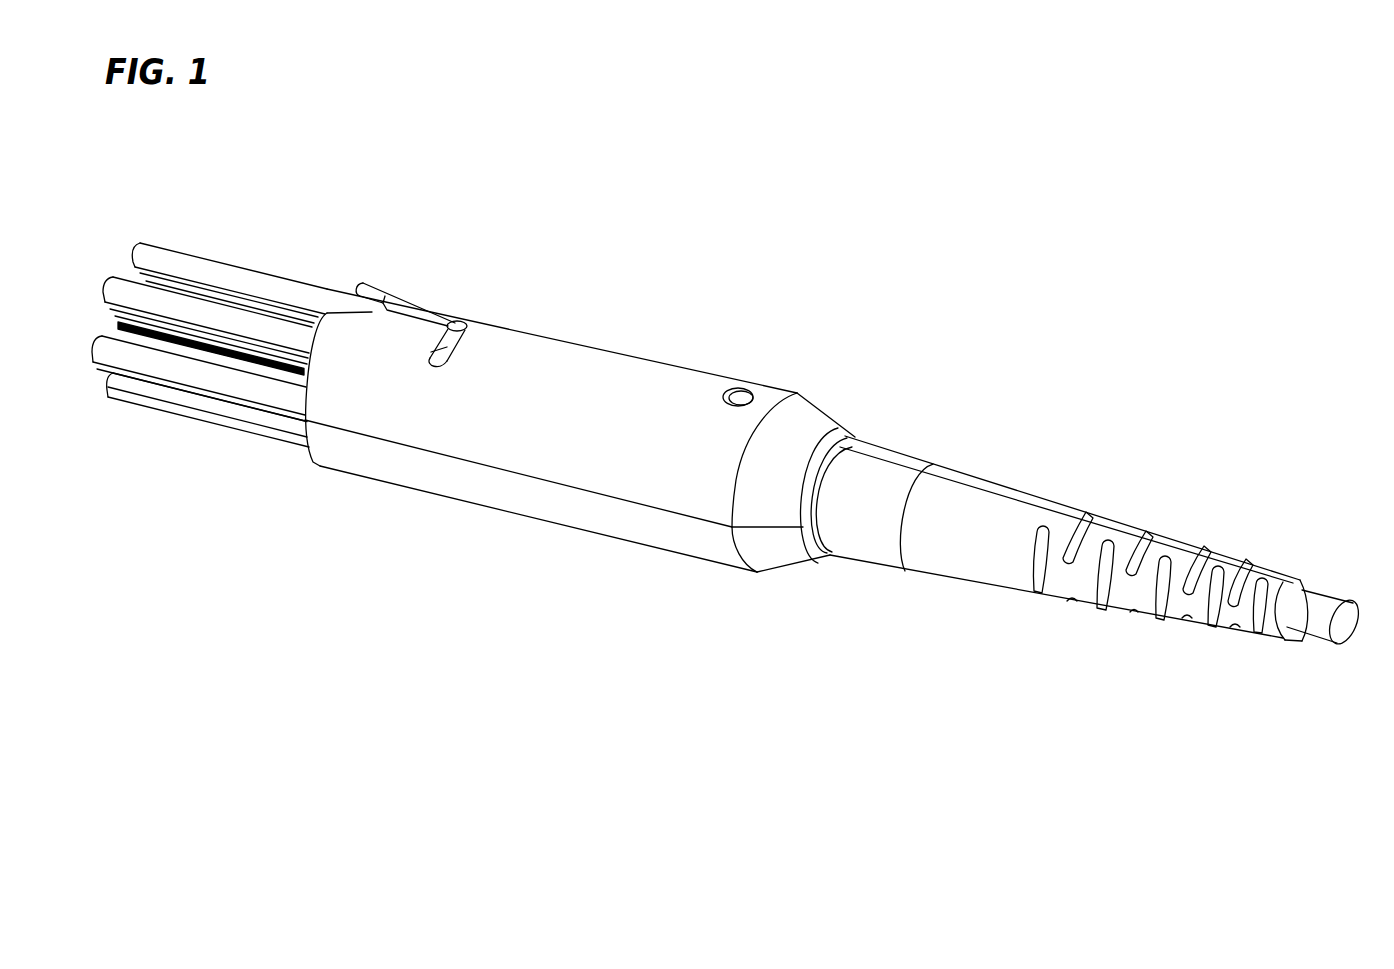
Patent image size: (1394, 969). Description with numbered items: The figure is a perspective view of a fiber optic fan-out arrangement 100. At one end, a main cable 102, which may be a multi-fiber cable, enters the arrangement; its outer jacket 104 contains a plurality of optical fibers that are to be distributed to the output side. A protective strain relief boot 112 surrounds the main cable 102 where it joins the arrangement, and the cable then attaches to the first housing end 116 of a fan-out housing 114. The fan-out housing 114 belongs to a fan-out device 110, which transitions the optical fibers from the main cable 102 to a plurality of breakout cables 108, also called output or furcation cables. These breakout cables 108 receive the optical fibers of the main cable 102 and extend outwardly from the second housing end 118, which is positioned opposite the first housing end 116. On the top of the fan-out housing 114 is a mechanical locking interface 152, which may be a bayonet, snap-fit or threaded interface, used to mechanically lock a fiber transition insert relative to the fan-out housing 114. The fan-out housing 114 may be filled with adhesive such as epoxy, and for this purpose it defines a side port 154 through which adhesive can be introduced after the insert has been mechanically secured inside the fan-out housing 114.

The fiber optic fan-out arrangement 100 is at (660, 234).
The main cable 102 is at (1338, 576).
The outer jacket 104 is at (1317, 632).
The breakout cables 108 is at (186, 443).
The fan-out device 110 is at (530, 537).
The protective strain relief boot 112 is at (1070, 478).
The fan-out housing 114 is at (566, 338).
The first housing end 116 is at (819, 594).
The second housing end 118 is at (312, 486).
The mechanical locking interface 152 is at (470, 297).
The side port 154 is at (742, 393).